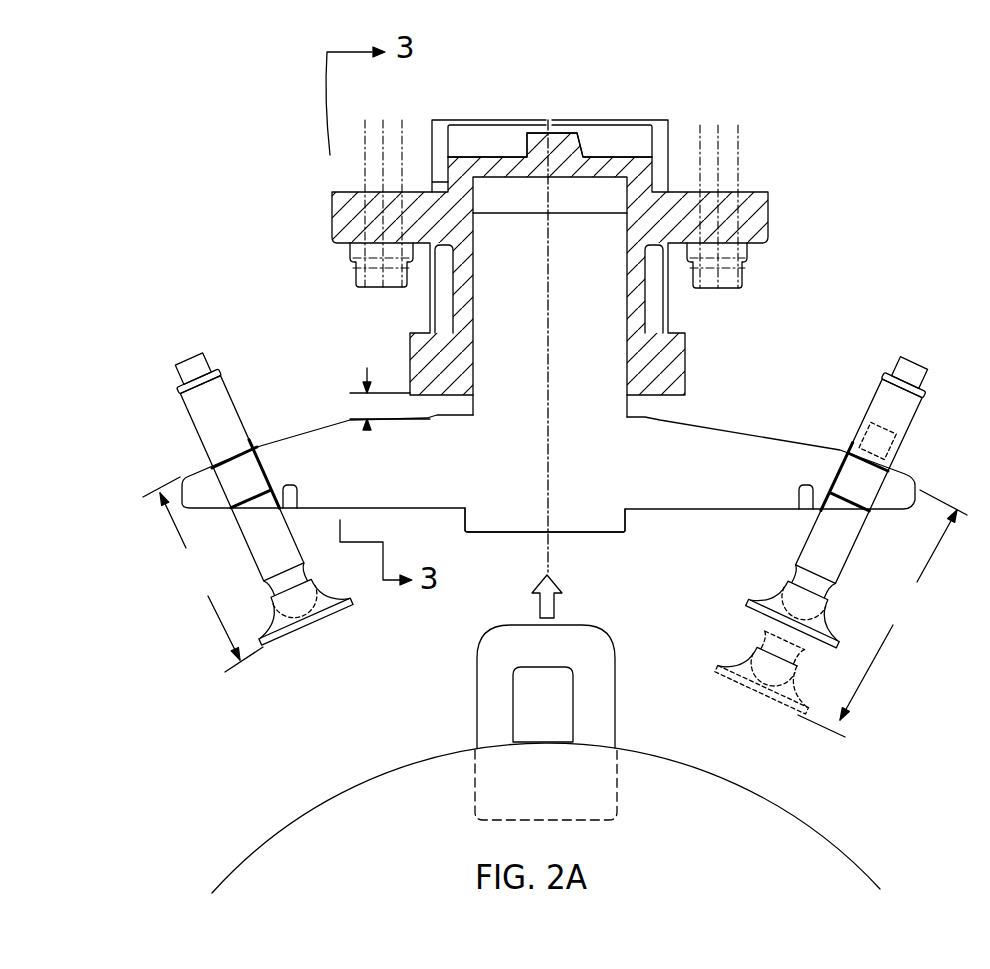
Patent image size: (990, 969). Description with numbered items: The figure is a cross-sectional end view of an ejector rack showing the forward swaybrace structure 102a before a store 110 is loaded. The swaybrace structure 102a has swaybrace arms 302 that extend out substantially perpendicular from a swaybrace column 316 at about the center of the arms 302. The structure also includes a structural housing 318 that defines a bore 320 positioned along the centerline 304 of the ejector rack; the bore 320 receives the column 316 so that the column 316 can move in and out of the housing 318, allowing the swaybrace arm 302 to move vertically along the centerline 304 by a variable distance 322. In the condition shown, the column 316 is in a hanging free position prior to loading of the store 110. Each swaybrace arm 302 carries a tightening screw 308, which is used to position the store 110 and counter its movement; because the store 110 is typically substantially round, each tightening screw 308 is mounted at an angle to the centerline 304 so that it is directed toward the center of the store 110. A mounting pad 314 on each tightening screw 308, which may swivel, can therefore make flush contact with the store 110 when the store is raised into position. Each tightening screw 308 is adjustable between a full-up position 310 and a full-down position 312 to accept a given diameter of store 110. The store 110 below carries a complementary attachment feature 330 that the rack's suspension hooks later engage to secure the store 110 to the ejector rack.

The forward swaybrace structure 102a is at (833, 190).
The store 110 is at (863, 863).
The swaybrace arm 302 is at (791, 441).
The centerline 304 is at (548, 520).
The tightening screw 308 is at (228, 373).
The full-up position 310 is at (203, 574).
The full-down position 312 is at (882, 613).
The mounting pad 314 is at (727, 677).
The swaybrace column 316 is at (523, 210).
The structural housing 318 is at (470, 153).
The bore 320 is at (603, 177).
The variable distance 322 is at (360, 407).
The attachment feature 330 is at (615, 713).